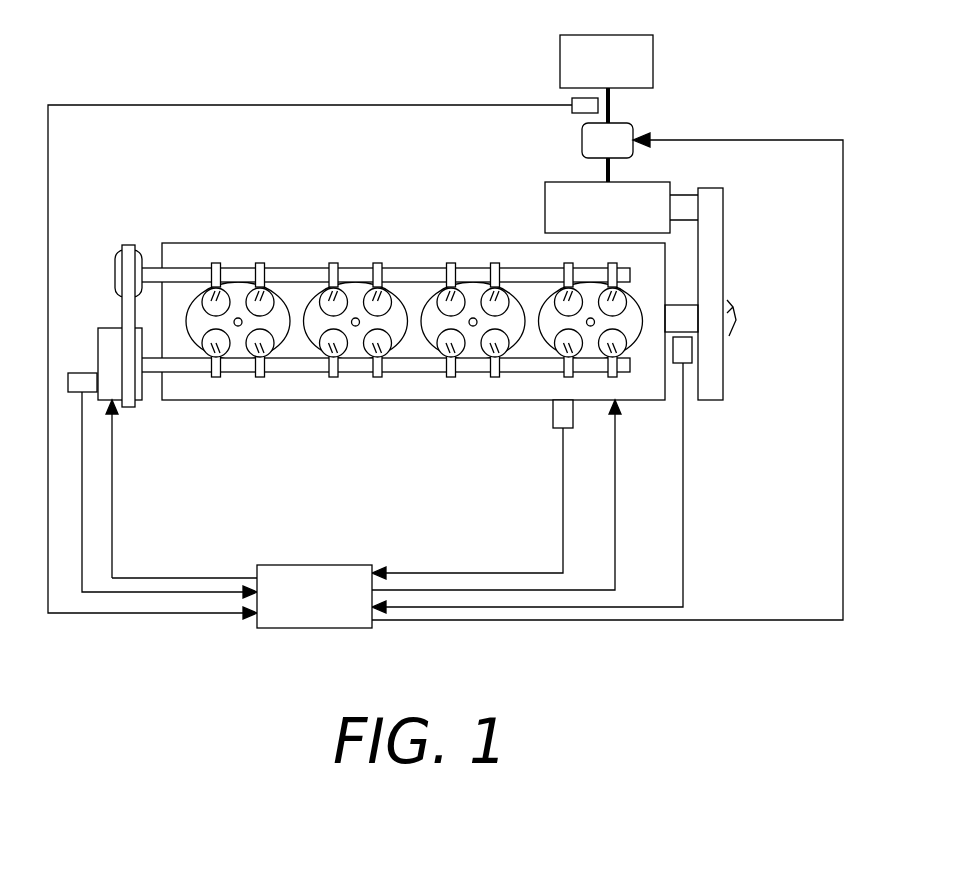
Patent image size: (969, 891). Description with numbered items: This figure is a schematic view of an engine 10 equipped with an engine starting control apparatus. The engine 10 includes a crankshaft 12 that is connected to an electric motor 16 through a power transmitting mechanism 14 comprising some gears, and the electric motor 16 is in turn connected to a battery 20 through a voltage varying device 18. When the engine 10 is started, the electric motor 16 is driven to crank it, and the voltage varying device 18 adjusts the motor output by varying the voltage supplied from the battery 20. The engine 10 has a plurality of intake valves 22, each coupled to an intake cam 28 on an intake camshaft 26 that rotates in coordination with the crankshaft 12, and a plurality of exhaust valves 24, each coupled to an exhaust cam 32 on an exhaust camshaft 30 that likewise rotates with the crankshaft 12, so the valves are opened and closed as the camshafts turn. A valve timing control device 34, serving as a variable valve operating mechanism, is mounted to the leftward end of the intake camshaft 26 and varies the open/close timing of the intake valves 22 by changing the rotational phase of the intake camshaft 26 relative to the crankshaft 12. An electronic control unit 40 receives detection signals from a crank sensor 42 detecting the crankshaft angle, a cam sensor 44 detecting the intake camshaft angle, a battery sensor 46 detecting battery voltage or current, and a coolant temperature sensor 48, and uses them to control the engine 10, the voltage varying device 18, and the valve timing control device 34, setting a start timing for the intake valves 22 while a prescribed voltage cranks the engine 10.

The engine 10 is at (262, 243).
The crankshaft 12 is at (736, 320).
The power transmitting mechanism 14 is at (723, 232).
The electric motor 16 is at (545, 203).
The voltage varying device 18 is at (582, 140).
The battery 20 is at (560, 50).
The intake valves 22 is at (320, 375).
The exhaust valves 24 is at (333, 290).
The intake camshaft 26 is at (165, 372).
The intake cams 28 is at (328, 377).
The exhaust camshaft 30 is at (178, 270).
The exhaust cams 32 is at (335, 290).
The valve timing control device 34 is at (103, 328).
The electronic control unit 40 is at (320, 565).
The crank sensor 42 is at (692, 350).
The cam sensor 44 is at (82, 373).
The battery sensor 46 is at (612, 101).
The coolant temperature sensor 48 is at (553, 418).